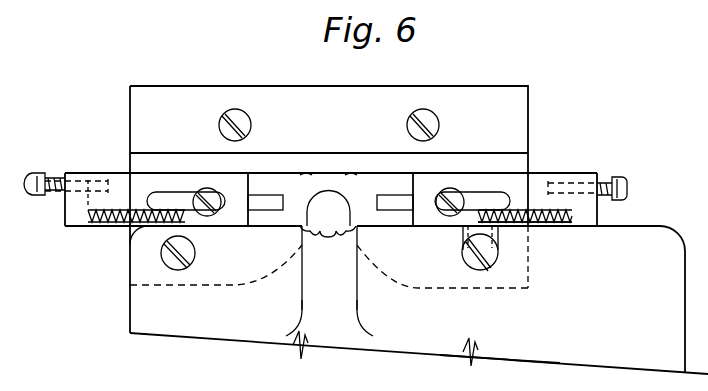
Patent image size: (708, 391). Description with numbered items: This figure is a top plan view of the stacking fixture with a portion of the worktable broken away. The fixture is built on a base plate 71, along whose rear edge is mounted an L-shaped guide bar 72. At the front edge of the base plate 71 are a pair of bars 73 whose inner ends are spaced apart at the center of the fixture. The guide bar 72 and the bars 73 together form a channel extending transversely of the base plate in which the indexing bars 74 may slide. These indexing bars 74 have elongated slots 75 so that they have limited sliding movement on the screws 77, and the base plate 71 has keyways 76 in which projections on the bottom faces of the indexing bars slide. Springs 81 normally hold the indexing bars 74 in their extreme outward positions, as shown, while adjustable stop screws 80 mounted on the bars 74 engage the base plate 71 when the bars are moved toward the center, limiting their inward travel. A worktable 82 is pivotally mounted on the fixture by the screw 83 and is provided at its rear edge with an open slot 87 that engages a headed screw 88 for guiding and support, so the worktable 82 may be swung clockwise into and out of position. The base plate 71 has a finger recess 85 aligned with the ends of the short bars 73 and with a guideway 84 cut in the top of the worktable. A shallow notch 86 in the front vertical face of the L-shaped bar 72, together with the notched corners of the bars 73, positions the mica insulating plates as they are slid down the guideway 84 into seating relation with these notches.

The base plate 71 is at (375, 182).
The L-shaped guide bar 72 is at (520, 106).
The bars 73 is at (227, 287).
The indexing bars 74 is at (78, 226).
The elongated slots 75 is at (176, 195).
The keyways 76 is at (268, 210).
The screws 77 is at (214, 193).
The adjustable stop screws 80 is at (37, 195).
The springs 81 is at (108, 226).
The worktable 82 is at (576, 366).
The screw 83 is at (168, 262).
The guideway 84 is at (306, 280).
The finger recess 85 is at (328, 214).
The shallow notch 86 is at (346, 172).
The open slot 87 is at (500, 236).
The headed screw 88 is at (500, 270).